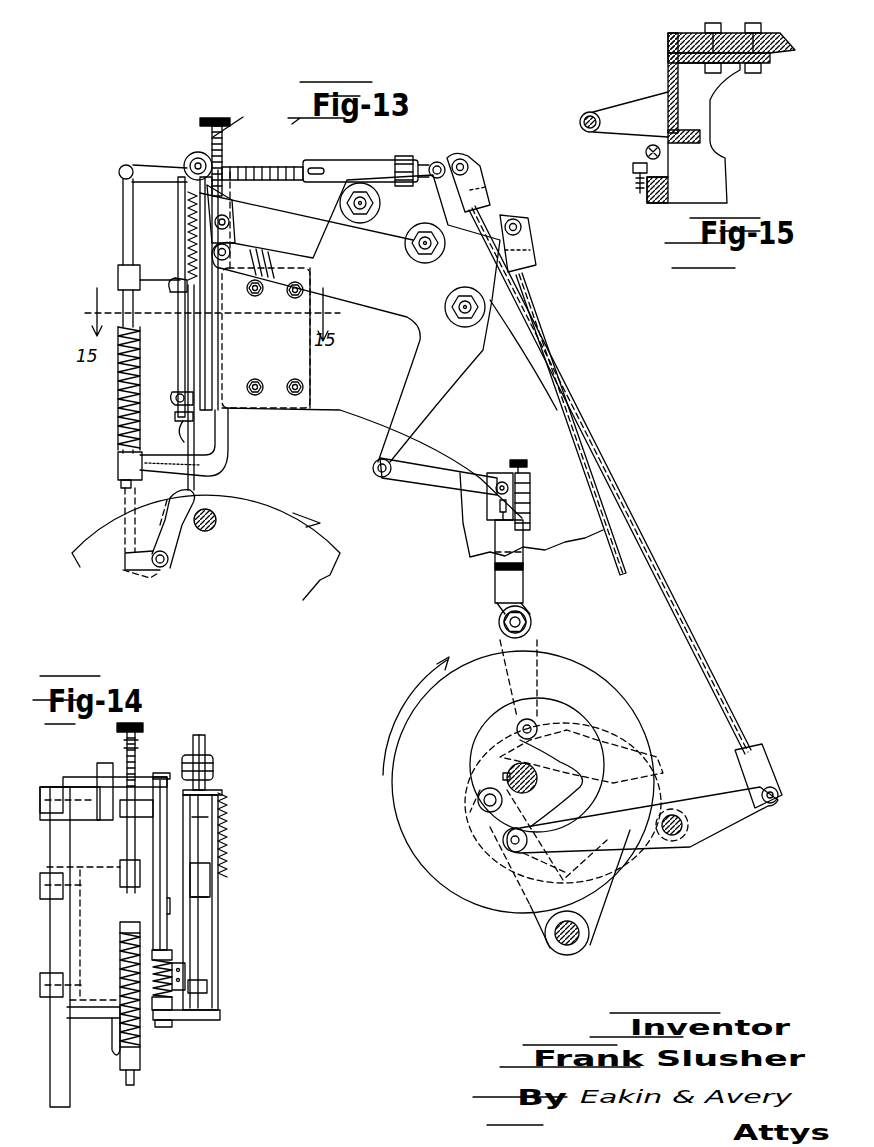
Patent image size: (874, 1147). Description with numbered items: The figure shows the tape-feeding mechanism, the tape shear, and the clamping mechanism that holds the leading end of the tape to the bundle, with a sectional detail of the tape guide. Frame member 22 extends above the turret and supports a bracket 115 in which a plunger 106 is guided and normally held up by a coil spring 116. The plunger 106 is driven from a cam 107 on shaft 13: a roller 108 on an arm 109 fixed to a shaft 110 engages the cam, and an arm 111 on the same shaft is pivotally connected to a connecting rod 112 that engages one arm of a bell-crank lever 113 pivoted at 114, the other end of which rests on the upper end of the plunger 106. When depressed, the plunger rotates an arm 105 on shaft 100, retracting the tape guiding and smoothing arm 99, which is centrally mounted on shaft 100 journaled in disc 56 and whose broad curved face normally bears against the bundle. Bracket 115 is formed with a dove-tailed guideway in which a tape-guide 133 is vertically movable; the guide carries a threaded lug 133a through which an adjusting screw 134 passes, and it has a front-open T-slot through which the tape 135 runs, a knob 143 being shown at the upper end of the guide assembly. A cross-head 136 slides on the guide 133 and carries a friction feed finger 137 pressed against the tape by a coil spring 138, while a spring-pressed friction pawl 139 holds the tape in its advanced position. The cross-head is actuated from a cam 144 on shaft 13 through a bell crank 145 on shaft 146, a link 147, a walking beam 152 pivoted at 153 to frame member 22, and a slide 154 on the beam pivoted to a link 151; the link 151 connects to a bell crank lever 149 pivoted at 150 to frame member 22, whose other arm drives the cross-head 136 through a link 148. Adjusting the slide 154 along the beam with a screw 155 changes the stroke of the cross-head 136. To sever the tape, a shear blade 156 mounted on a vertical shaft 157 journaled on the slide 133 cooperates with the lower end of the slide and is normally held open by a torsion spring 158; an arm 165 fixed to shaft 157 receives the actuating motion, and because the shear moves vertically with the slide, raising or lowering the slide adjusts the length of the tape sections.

In FIG. 13, the shaft 13 is at (507, 778).
In FIG. 13, the frame member 22 is at (530, 387).
In FIG. 14, the frame member 22 is at (70, 1088).
In FIG. 13, the disc 56 is at (256, 505).
In FIG. 13, the tape guiding and smoothing arm 99 is at (190, 535).
In FIG. 13, the shaft 100 is at (166, 566).
In FIG. 13, the arm 105 is at (143, 580).
In FIG. 13, the plunger 106 is at (118, 233).
In FIG. 15, the plunger 106 is at (588, 112).
In FIG. 14, the plunger 106 is at (140, 1078).
In FIG. 13, the cam 107 is at (565, 725).
In FIG. 13, the roller 108 is at (502, 848).
In FIG. 13, the arm 109 is at (630, 850).
In FIG. 13, the shaft 110 is at (682, 815).
In FIG. 13, the arm 111 is at (720, 815).
In FIG. 13, the connecting rod 112 is at (690, 615).
In FIG. 13, the bell-crank lever 113 is at (318, 208).
In FIG. 14, the bell-crank lever 113 is at (97, 770).
In FIG. 13, the pivot 114 is at (375, 215).
In FIG. 13, the bracket 115 is at (228, 462).
In FIG. 15, the bracket 115 is at (632, 97).
In FIG. 14, the bracket 115 is at (112, 1020).
In FIG. 13, the coil spring 116 is at (118, 436).
In FIG. 14, the coil spring 116 is at (120, 960).
In FIG. 13, the tape-guide 133 is at (205, 342).
In FIG. 15, the tape-guide 133 is at (700, 170).
In FIG. 14, the tape-guide 133 is at (153, 855).
In FIG. 14, the threaded lug 133a is at (140, 800).
In FIG. 13, the adjusting screw 134 is at (212, 118).
In FIG. 14, the adjusting screw 134 is at (133, 723).
In FIG. 13, the tape 135 is at (245, 115).
In FIG. 14, the tape 135 is at (207, 740).
In FIG. 13, the cross-head 136 is at (228, 196).
In FIG. 13, the friction feed finger 137 is at (176, 280).
In FIG. 14, the friction feed finger 137 is at (212, 872).
In FIG. 13, the coil spring 138 is at (186, 214).
In FIG. 14, the coil spring 138 is at (227, 806).
In FIG. 13, the friction pawl 139 is at (170, 402).
In FIG. 14, the friction pawl 139 is at (207, 986).
In FIG. 13, the knob 143 is at (188, 155).
In FIG. 14, the knob 143 is at (213, 760).
In FIG. 13, the cam 144 is at (505, 905).
In FIG. 13, the bell crank 145 is at (600, 908).
In FIG. 13, the shaft 146 is at (552, 945).
In FIG. 13, the link 147 is at (645, 740).
In FIG. 13, the link 148 is at (228, 235).
In FIG. 13, the bell crank lever 149 is at (386, 292).
In FIG. 13, the pivot 150 is at (465, 313).
In FIG. 13, the link 151 is at (458, 495).
In FIG. 13, the walking beam 152 is at (522, 580).
In FIG. 13, the pivot 153 is at (522, 620).
In FIG. 13, the slide 154 is at (531, 503).
In FIG. 13, the screw 155 is at (516, 460).
In FIG. 13, the shear blade 156 is at (183, 426).
In FIG. 15, the shear blade 156 is at (630, 190).
In FIG. 14, the shear blade 156 is at (200, 1020).
In FIG. 15, the vertical shaft 157 is at (645, 152).
In FIG. 14, the vertical shaft 157 is at (170, 907).
In FIG. 14, the torsion spring 158 is at (172, 960).
In FIG. 14, the arm 165 is at (124, 744).